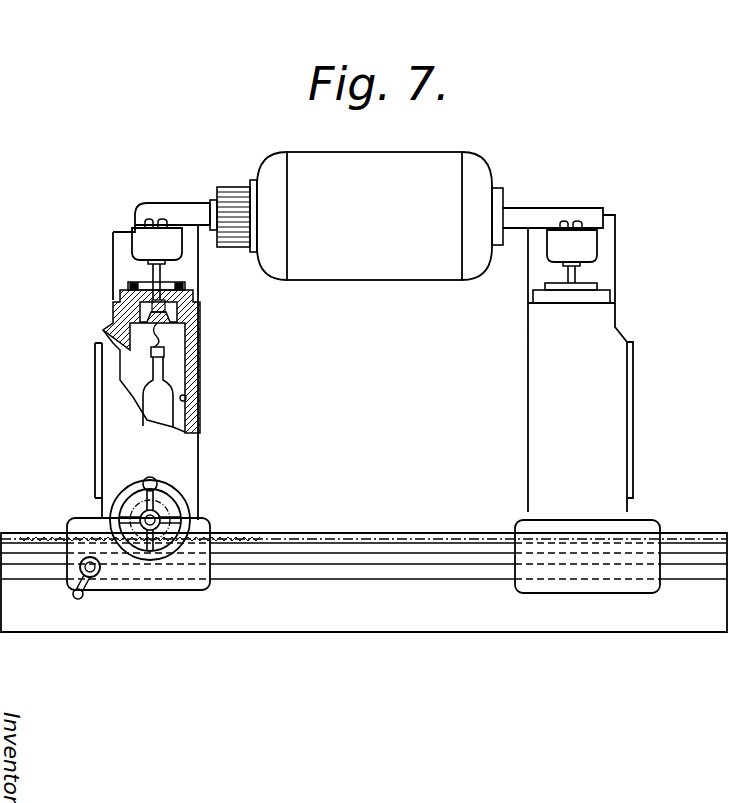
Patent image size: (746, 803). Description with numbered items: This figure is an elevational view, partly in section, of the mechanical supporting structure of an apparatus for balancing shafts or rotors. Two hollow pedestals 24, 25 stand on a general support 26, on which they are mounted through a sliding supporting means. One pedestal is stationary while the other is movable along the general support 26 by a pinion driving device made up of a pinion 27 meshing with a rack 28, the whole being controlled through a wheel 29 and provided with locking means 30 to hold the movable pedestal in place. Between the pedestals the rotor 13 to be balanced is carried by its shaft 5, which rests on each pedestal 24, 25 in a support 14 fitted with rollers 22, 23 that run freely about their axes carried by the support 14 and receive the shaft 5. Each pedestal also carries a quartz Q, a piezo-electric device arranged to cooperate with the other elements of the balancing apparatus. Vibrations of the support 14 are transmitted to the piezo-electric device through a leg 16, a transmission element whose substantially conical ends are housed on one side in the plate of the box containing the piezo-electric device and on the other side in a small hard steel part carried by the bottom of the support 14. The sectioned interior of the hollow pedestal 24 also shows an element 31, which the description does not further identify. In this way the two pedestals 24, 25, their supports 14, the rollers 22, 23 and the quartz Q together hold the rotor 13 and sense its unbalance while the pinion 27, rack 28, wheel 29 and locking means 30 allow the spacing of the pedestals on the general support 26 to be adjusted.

The shaft 5 is at (167, 210).
The rotor 13 is at (408, 162).
The support 14 is at (143, 238).
The leg 16 is at (148, 270).
The quartz Q is at (127, 295).
The roller 22 is at (147, 222).
The roller 23 is at (162, 222).
The hollow pedestal 24 is at (200, 322).
The hollow pedestal 25 is at (528, 352).
The general support 26 is at (337, 613).
The pinion 27 is at (168, 528).
The rack 28 is at (250, 537).
The wheel 29 is at (177, 493).
The locking means 30 is at (78, 600).
The bottle 31 is at (200, 393).